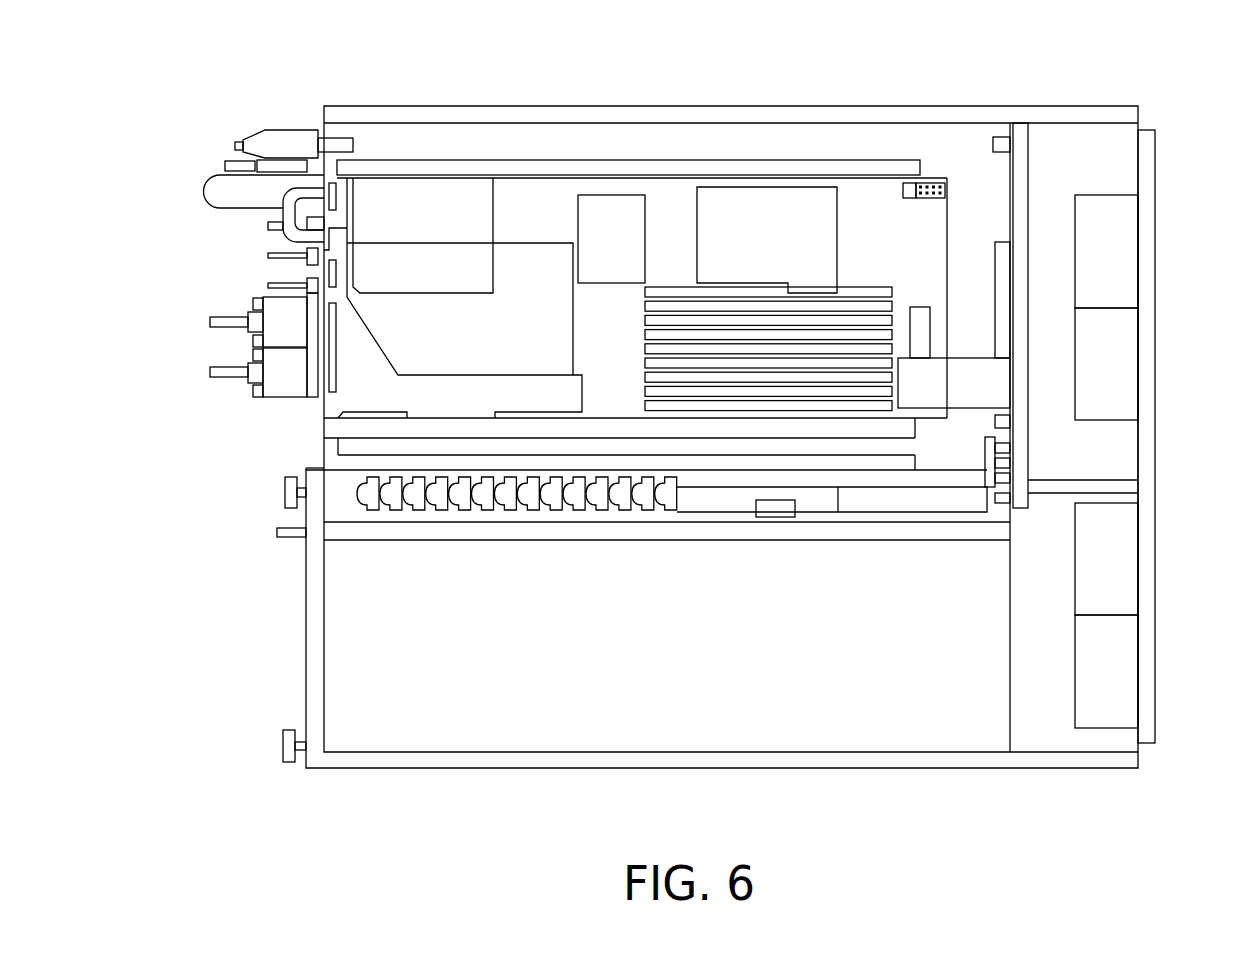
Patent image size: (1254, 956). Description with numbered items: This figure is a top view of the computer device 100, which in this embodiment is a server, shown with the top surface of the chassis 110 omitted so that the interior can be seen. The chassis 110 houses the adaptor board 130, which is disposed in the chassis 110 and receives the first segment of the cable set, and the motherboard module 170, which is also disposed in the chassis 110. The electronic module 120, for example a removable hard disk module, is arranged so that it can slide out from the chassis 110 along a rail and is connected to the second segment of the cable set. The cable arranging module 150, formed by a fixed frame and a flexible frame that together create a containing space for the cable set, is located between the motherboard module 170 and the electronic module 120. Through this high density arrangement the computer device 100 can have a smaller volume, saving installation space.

The computer device 100 is at (1203, 822).
The chassis 110 is at (918, 758).
The electronic module 120 is at (512, 720).
The adaptor board 130 is at (1018, 162).
The cable arranging module 150 is at (372, 493).
The motherboard module 170 is at (675, 205).